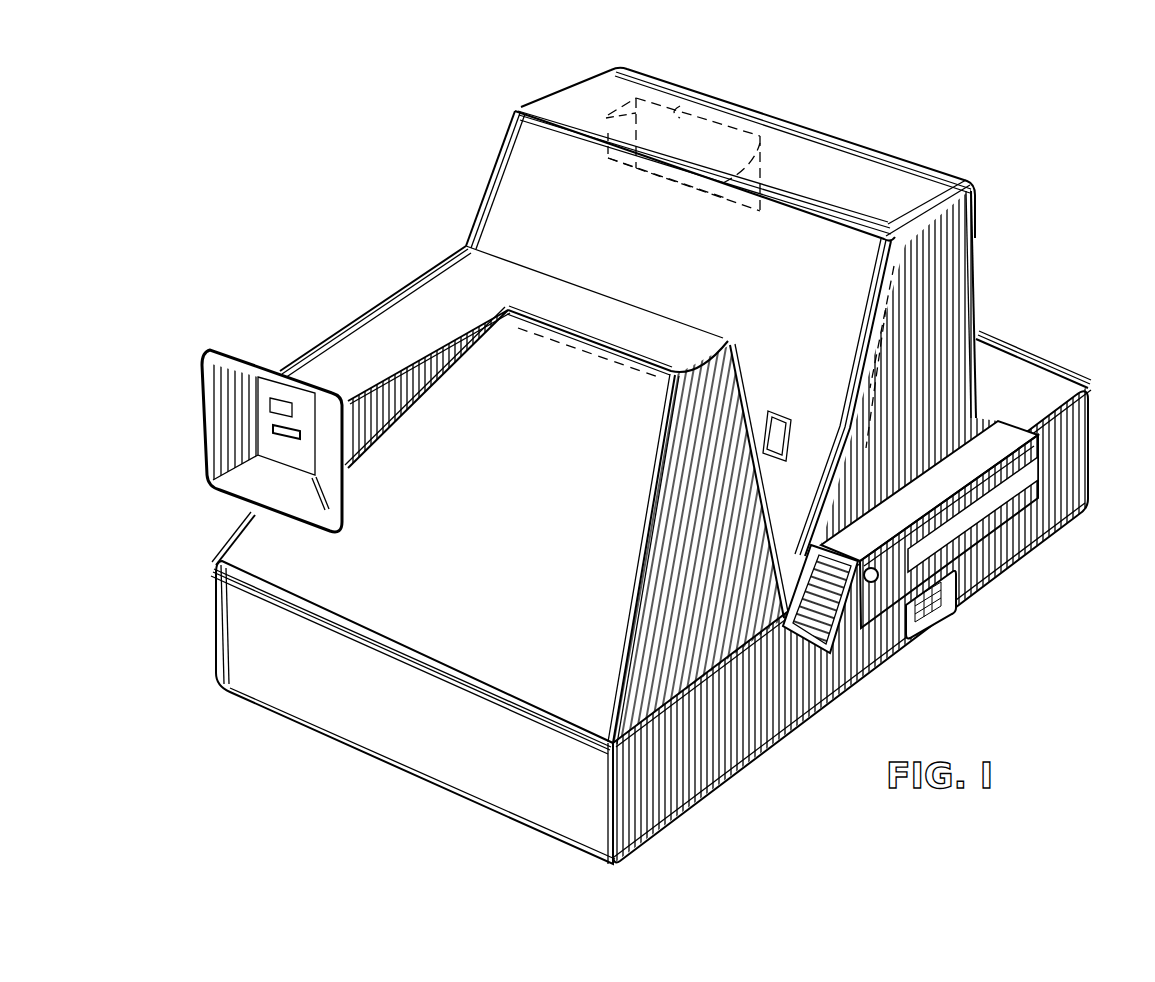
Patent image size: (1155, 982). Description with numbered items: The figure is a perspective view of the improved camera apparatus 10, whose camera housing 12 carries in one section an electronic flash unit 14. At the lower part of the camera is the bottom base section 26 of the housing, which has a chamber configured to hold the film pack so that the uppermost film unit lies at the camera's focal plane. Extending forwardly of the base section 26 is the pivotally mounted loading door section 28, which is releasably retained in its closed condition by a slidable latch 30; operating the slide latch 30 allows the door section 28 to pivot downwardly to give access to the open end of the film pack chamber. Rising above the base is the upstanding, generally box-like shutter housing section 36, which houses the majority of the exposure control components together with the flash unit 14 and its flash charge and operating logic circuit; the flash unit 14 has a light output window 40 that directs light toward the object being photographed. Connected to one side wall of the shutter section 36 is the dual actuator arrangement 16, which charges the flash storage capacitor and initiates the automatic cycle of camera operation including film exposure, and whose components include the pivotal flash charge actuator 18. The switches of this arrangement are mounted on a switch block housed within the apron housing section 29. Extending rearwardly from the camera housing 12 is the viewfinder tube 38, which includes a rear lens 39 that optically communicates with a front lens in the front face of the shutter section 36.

The camera apparatus 10 is at (1042, 160).
The camera housing 12 is at (505, 539).
The electronic flash unit 14 is at (590, 105).
The light output window 40 is at (688, 104).
The shutter housing section 36 is at (948, 261).
The apron housing section 29 is at (985, 336).
The dual actuator arrangement 16 is at (968, 473).
The pivotal flash charge actuator 18 is at (943, 522).
The loading door section 28 is at (1082, 485).
The bottom base section 26 is at (378, 731).
The slidable latch 30 is at (920, 605).
The viewfinder tube 38 is at (370, 291).
The rear lens 39 is at (272, 402).